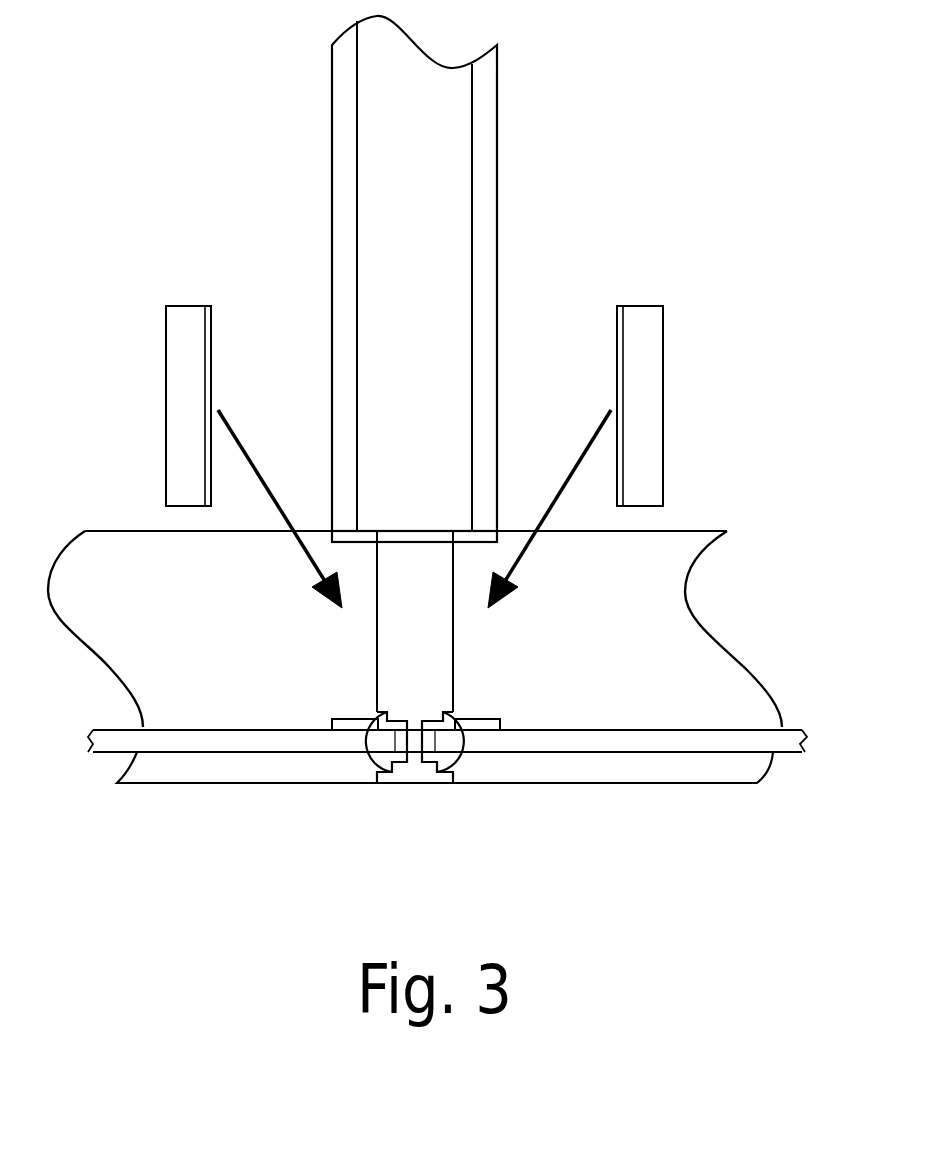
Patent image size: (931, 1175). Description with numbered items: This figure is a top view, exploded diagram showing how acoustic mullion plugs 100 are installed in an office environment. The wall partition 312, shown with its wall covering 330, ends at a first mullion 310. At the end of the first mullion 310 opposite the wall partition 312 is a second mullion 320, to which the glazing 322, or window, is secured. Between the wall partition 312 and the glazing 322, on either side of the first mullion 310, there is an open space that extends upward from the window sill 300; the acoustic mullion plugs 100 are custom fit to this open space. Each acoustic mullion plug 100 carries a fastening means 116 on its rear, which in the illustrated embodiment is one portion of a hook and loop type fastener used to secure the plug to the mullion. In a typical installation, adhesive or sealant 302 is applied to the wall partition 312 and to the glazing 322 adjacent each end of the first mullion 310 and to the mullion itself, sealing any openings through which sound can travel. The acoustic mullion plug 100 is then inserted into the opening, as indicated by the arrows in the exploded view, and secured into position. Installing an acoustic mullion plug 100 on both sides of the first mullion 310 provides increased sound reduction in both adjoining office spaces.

The acoustic mullion plug 100 is at (416, 398).
The fastening means 116 is at (211, 370).
The window sill 300 is at (697, 655).
The adhesive or sealant 302 is at (343, 727).
The first mullion 310 is at (388, 690).
The wall partition 312 is at (453, 240).
The second mullion 320 is at (447, 757).
The glazing 322 is at (613, 740).
The wall covering 330 is at (467, 279).